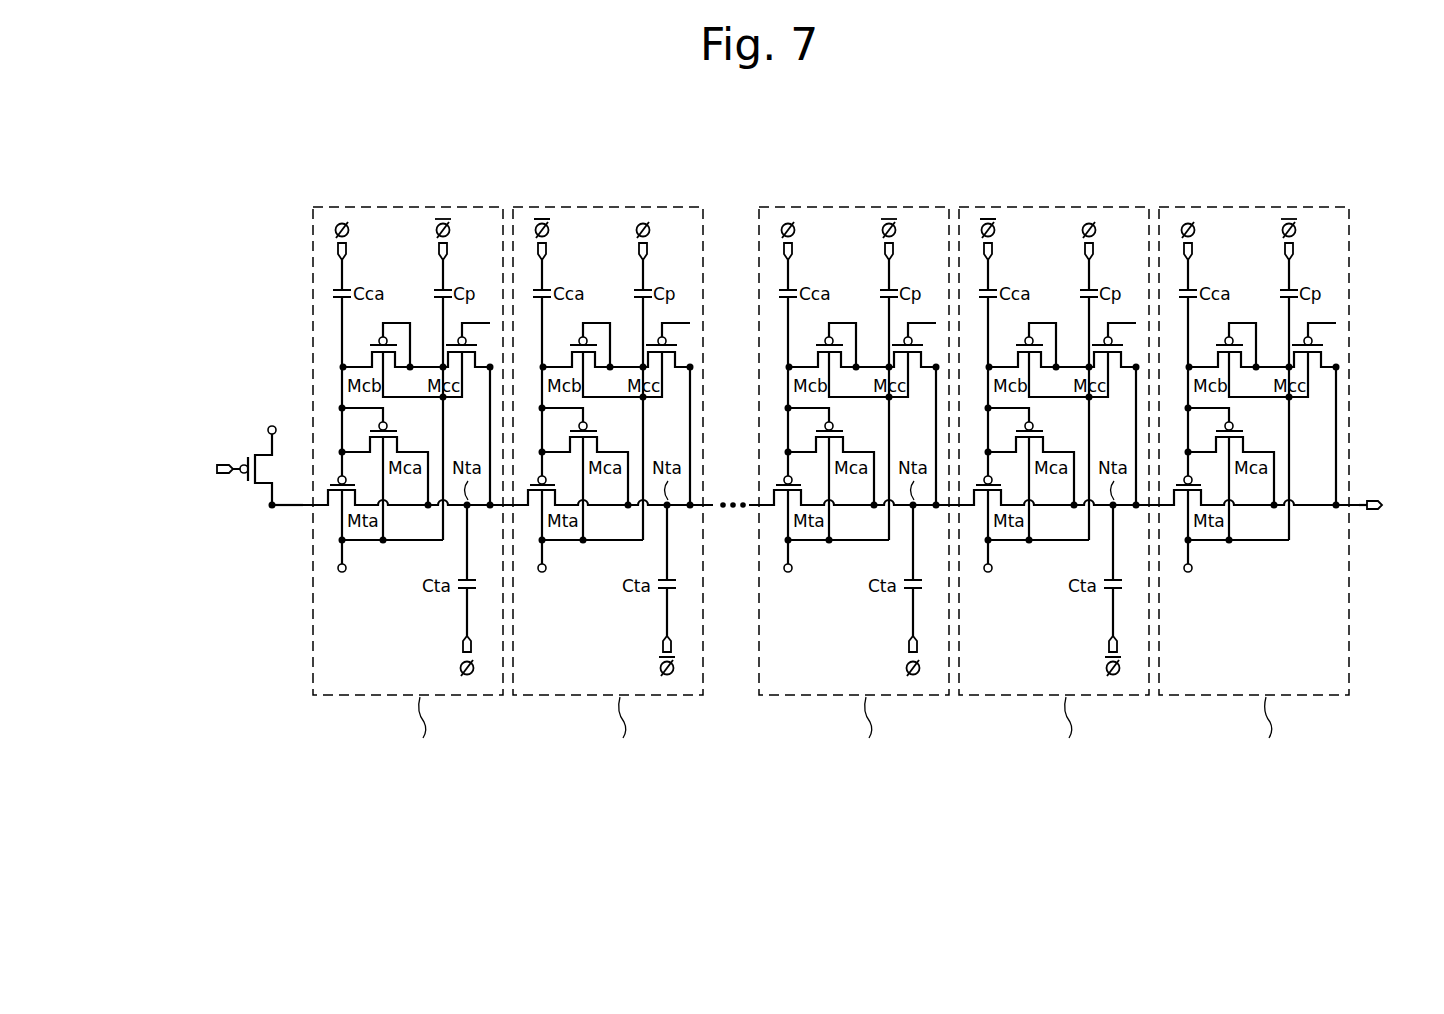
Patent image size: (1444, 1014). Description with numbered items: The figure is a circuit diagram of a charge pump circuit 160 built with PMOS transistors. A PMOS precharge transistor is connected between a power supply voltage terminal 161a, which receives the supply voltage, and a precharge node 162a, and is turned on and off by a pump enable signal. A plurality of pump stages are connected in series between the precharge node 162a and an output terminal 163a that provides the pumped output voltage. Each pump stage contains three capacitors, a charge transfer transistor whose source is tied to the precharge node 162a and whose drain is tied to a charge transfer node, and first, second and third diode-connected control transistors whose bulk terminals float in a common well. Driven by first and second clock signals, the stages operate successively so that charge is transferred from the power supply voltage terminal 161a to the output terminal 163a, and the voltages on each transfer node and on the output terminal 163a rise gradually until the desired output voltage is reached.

The charge pump circuit 160 is at (1342, 138).
The power supply voltage terminal 161a is at (268, 428).
The precharge node 162a is at (268, 506).
The output terminal 163a is at (1373, 515).